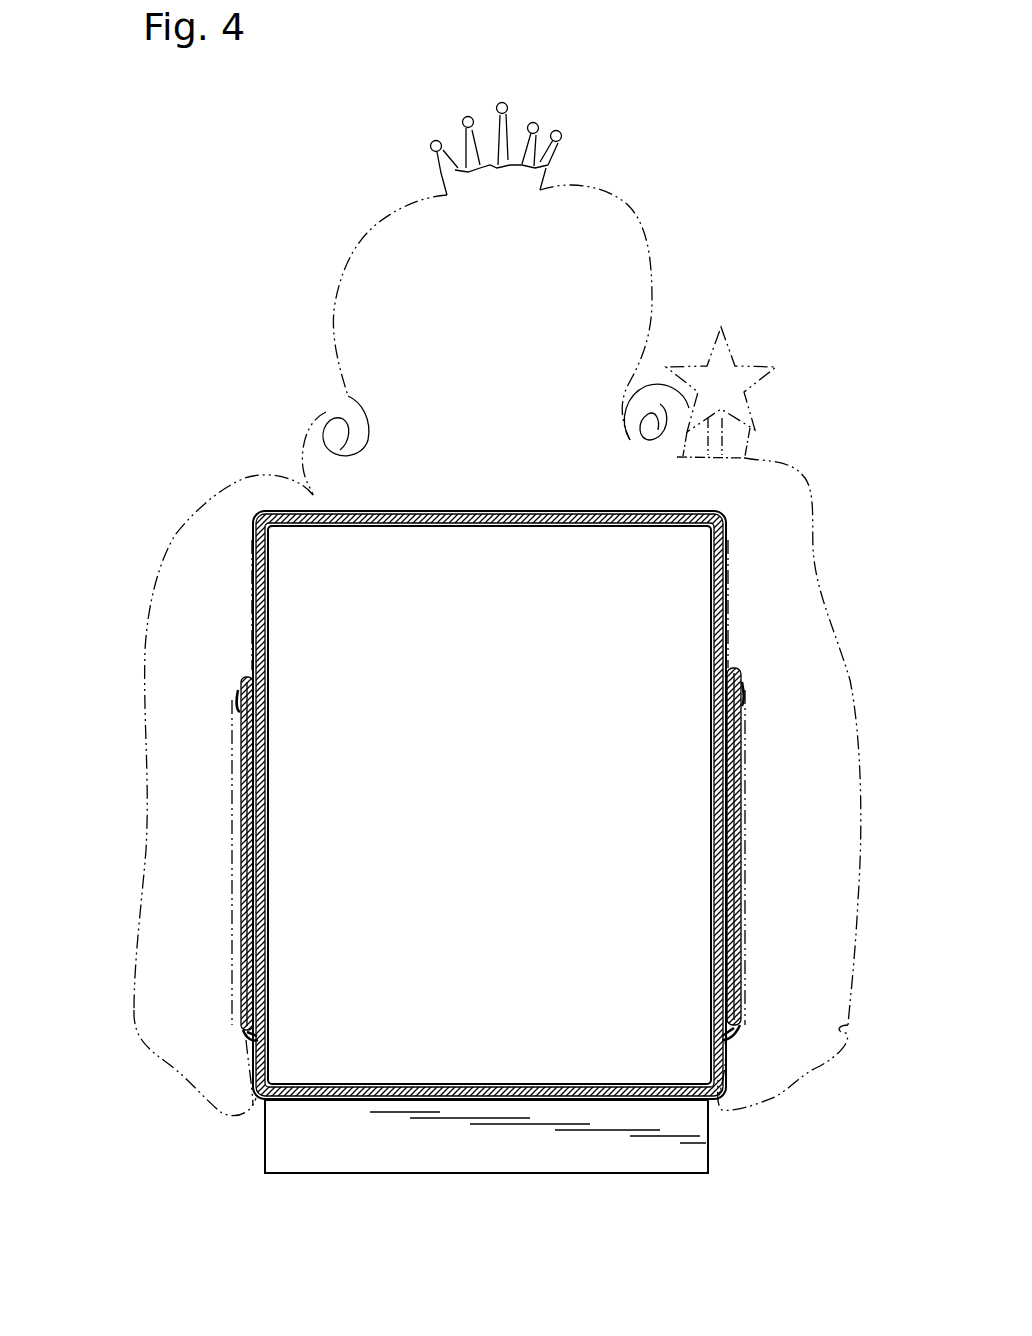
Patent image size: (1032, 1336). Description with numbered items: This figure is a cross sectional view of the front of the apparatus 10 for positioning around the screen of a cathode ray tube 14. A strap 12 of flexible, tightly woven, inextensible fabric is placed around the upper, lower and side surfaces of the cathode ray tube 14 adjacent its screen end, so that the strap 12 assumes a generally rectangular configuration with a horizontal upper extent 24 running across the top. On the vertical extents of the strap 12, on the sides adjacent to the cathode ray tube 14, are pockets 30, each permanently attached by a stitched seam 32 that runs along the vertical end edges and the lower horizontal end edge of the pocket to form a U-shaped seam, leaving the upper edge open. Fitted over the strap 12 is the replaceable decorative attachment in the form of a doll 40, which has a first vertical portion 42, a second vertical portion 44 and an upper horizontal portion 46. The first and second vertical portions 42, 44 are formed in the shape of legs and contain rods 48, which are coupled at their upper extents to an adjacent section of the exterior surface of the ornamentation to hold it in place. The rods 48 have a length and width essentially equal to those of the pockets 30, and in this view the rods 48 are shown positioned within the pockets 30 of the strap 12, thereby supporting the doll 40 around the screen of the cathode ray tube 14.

The apparatus for positioning around the screen of a cathode ray tube 10 is at (385, 167).
The strap 12 is at (312, 523).
The cathode ray tube 14 is at (456, 864).
The horizontal upper extent 24 is at (515, 522).
The pockets 30 is at (240, 843).
The stitched seam 32 is at (250, 1035).
The doll 40 is at (360, 242).
The first vertical portion 42 is at (175, 748).
The second vertical portion 44 is at (798, 690).
The upper horizontal portion 46 is at (578, 475).
The rods 48 is at (235, 703).